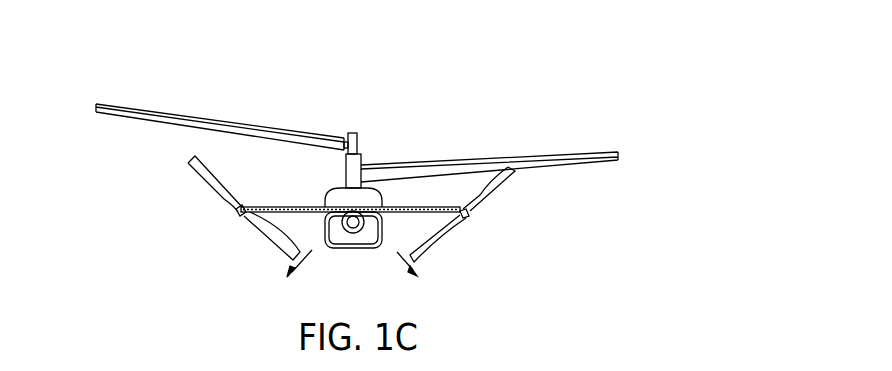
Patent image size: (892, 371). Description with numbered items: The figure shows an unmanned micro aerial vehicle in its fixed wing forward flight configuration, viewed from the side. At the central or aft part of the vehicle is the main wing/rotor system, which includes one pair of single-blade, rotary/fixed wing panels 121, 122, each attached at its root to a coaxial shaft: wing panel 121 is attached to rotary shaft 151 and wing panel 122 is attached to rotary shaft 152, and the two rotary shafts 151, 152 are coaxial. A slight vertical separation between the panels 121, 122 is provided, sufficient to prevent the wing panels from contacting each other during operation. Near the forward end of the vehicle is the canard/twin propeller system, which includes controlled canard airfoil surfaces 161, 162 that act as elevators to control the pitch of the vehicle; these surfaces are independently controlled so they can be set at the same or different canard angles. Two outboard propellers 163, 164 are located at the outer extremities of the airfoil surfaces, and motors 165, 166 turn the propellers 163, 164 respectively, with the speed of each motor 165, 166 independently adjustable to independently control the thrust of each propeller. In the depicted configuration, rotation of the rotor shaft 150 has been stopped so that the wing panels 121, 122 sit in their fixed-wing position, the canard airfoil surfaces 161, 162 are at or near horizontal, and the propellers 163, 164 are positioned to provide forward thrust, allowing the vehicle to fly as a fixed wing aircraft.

The rotor shaft 150 is at (125, 72).
The wing panel 122 is at (205, 124).
The wing panel 121 is at (563, 162).
The rotary shaft 152 is at (351, 133).
The rotary shaft 151 is at (358, 160).
The canard airfoil surface 161 is at (400, 215).
The canard airfoil surface 162 is at (310, 207).
The propeller 164 is at (198, 178).
The motor 166 is at (241, 206).
The propeller 163 is at (497, 186).
The motor 165 is at (467, 218).